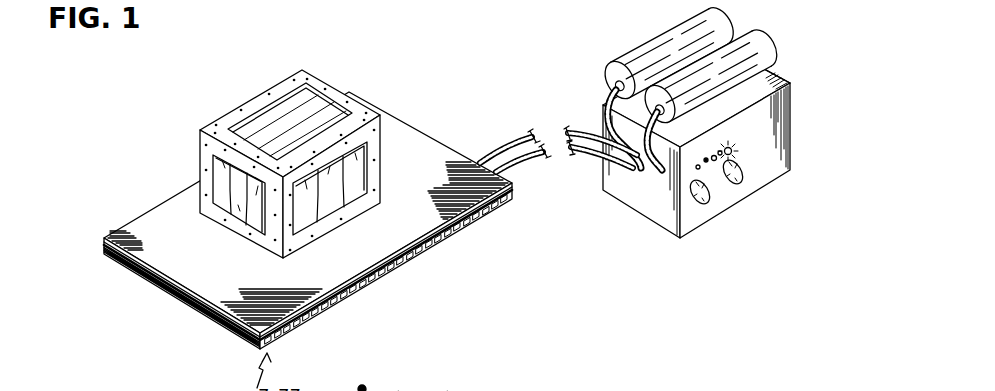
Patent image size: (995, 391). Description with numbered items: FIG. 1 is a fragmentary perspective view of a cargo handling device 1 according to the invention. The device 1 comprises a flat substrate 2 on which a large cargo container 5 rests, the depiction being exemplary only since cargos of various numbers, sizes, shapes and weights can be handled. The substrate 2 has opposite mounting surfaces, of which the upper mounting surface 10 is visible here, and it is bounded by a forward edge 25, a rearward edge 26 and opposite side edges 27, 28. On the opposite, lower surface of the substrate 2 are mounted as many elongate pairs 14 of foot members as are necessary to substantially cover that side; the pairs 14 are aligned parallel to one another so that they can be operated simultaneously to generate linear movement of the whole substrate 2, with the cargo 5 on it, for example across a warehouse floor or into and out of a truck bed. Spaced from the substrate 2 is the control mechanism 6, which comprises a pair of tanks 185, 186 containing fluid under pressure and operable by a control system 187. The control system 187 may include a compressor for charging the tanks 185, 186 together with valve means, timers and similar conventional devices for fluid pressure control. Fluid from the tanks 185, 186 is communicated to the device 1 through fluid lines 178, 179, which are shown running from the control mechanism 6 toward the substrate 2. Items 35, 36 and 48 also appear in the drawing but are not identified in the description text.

The cargo handling device 1 is at (403, 88).
The substrate 2 is at (300, 230).
The cargo container 5 is at (264, 149).
The control mechanism 6 is at (687, 140).
The mounting surface 10 is at (305, 274).
The pairs of foot members 14 is at (443, 243).
The forward edge 25 is at (430, 130).
The rearward edge 26 is at (196, 296).
The side edge 27 is at (388, 258).
The side edge 28 is at (190, 185).
The fastener 35 is at (363, 386).
The connector 36 is at (398, 390).
The bracket 48 is at (447, 390).
The fluid line 178 is at (503, 147).
The fluid line 179 is at (520, 165).
The tank 185 is at (683, 35).
The tank 186 is at (750, 40).
The control system 187 is at (754, 162).